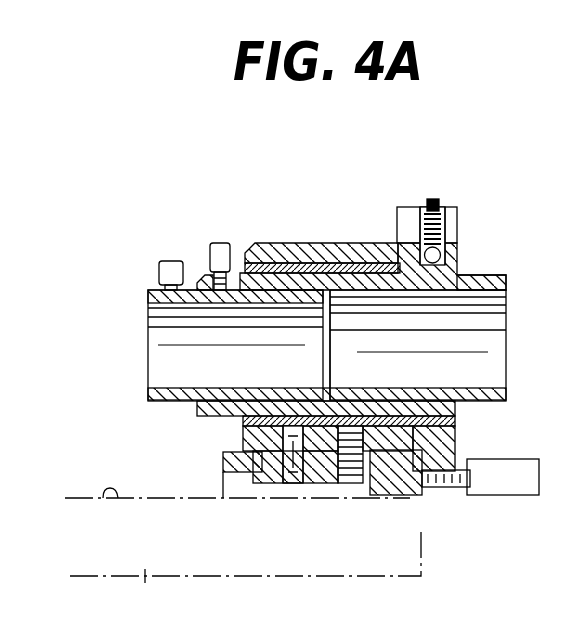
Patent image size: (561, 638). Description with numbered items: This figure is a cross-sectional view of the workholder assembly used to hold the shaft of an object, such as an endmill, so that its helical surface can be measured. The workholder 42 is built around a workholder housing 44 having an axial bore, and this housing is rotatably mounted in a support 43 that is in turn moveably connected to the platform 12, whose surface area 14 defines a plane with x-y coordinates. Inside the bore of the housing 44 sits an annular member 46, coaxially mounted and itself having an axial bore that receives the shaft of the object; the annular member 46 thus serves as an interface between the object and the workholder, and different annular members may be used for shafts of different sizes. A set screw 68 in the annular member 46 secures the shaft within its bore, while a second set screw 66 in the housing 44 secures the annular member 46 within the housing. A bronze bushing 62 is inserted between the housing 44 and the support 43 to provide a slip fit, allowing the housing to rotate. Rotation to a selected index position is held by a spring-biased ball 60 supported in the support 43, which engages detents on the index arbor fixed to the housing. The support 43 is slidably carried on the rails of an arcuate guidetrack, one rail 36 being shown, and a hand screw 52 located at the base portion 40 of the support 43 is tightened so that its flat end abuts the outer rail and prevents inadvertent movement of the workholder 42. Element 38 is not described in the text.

The platform 12 is at (141, 588).
The annular surface area portion 14 is at (106, 512).
The rail 36 is at (222, 463).
The slide block 38 is at (397, 471).
The base portion 40 is at (412, 472).
The workholder 42 is at (494, 312).
The support 43 is at (312, 243).
The workholder housing 44 is at (484, 275).
The annular member 46 is at (150, 290).
The hand screw 52 is at (537, 459).
The spring-biased ball 60 is at (428, 199).
The bronze bushing 62 is at (373, 262).
The set screw 66 is at (220, 243).
The set screw 68 is at (165, 261).